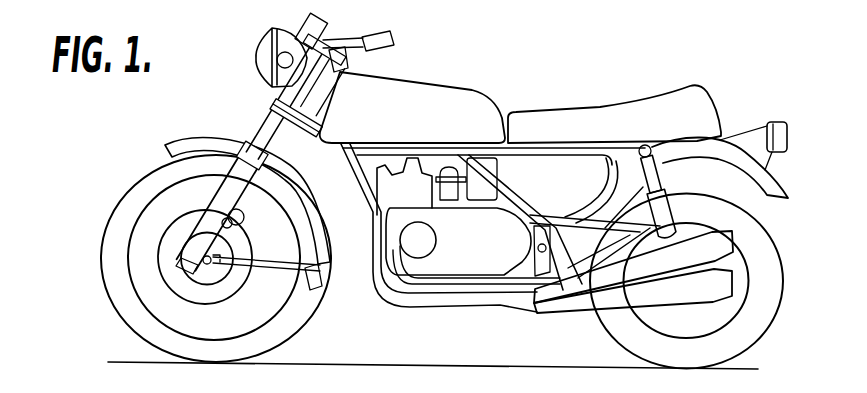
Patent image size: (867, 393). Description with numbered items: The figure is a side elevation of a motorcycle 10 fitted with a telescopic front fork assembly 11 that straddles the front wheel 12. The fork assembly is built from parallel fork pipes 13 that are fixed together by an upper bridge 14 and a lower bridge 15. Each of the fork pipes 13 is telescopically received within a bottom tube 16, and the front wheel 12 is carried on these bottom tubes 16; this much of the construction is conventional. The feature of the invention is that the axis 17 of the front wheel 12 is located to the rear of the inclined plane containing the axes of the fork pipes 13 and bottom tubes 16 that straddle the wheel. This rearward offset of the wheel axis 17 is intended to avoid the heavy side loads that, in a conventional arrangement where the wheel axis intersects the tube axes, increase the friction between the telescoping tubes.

The motorcycle 10 is at (474, 90).
The telescopic front fork assembly 11 is at (262, 126).
The front wheel 12 is at (133, 308).
The fork pipes 13 is at (270, 146).
The bridge 14 is at (347, 68).
The bridge 15 is at (300, 122).
The bottom tube 16 is at (222, 205).
The axis of the wheel 17 is at (207, 264).